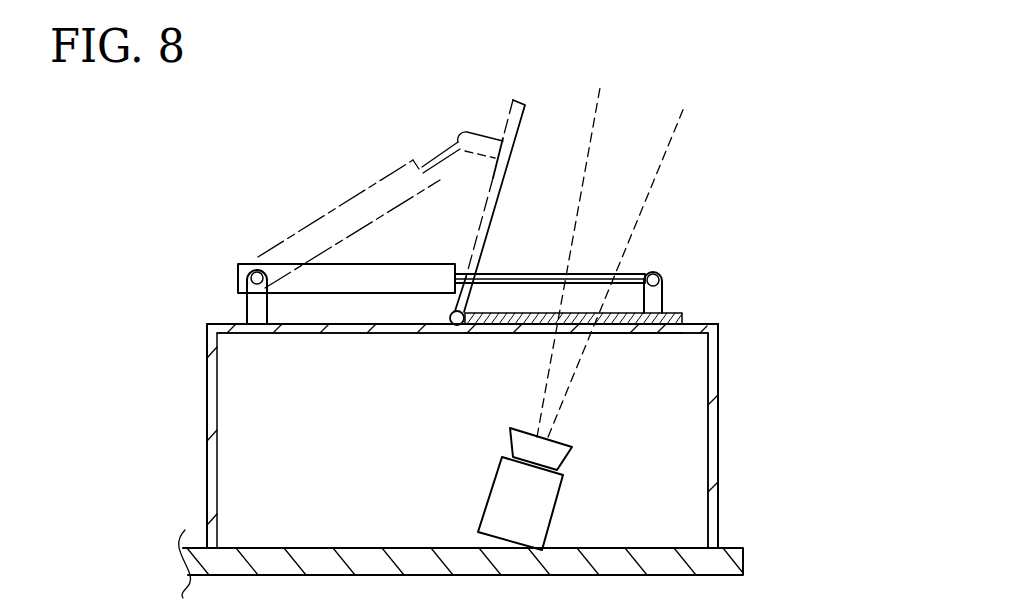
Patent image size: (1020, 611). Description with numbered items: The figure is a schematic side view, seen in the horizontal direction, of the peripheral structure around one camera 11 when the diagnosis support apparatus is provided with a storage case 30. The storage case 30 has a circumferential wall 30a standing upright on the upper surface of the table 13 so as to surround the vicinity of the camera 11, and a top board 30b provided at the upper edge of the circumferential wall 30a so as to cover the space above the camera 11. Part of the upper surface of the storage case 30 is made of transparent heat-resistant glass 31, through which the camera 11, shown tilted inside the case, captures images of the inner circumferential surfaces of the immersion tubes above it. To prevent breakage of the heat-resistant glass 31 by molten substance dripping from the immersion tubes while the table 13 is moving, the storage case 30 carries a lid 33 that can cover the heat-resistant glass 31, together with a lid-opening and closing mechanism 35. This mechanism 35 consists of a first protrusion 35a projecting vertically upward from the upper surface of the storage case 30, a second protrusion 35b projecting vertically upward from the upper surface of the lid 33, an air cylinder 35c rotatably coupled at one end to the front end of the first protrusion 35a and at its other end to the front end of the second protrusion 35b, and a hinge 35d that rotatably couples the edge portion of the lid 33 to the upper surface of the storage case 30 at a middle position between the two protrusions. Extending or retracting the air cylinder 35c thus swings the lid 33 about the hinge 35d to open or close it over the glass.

The camera 11 is at (562, 490).
The table 13 is at (743, 562).
The storage case 30 is at (486, 391).
The circumferential wall 30a is at (718, 517).
The top board 30b is at (218, 322).
The heat-resistant glass 31 is at (620, 335).
The lid 33 is at (670, 312).
The lid-opening and closing mechanism 35 is at (485, 203).
The first protrusion 35a is at (256, 272).
The second protrusion 35b is at (652, 273).
The air cylinder 35c is at (355, 293).
The hinge 35d is at (450, 313).